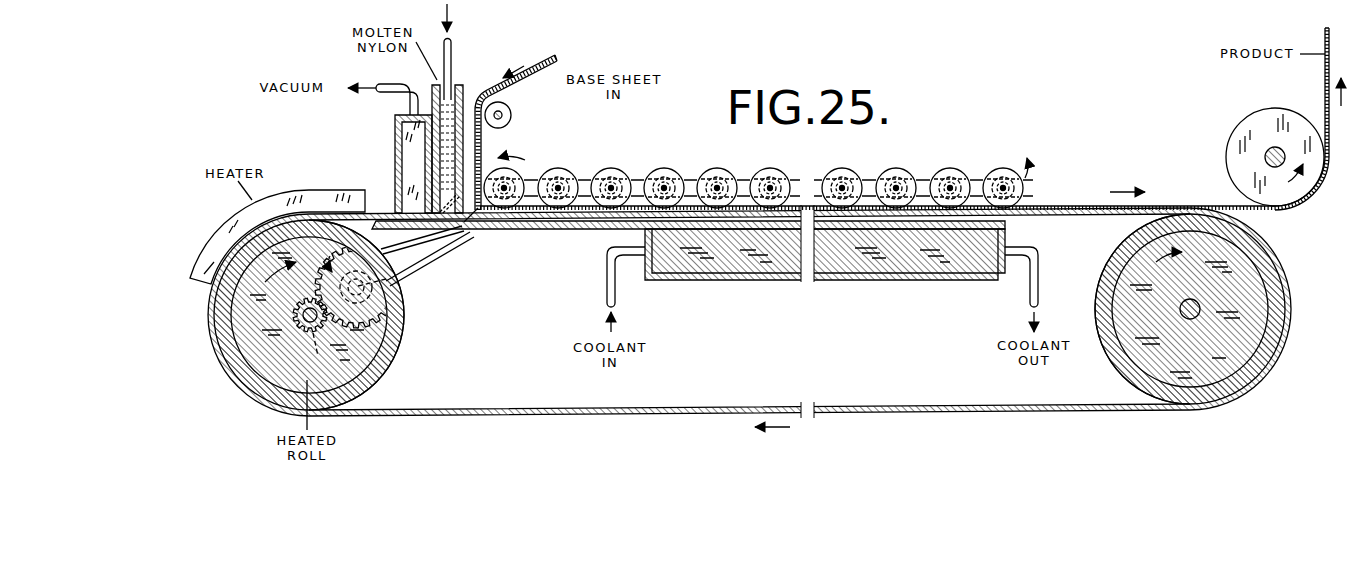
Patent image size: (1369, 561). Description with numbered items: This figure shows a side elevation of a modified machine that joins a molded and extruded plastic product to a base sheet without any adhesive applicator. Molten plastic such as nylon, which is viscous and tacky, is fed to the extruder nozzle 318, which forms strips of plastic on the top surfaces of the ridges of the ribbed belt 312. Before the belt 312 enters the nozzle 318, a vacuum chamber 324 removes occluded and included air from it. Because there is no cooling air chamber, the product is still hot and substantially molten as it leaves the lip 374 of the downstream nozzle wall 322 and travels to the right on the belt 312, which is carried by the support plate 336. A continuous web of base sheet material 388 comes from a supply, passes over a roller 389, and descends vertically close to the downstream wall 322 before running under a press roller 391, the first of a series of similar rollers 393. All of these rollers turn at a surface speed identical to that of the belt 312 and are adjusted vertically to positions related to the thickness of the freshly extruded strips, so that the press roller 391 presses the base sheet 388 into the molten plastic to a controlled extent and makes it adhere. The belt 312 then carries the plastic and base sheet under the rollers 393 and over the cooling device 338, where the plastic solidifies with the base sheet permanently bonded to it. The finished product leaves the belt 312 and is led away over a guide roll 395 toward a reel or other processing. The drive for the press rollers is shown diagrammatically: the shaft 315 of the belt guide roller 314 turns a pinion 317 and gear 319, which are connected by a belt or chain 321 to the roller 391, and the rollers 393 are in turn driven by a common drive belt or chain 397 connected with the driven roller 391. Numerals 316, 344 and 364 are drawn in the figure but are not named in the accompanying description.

The belt 312 is at (494, 410).
The belt guide roller 314 is at (242, 362).
The shaft 315 is at (296, 313).
The return roller 316 is at (1193, 402).
The pinion 317 is at (400, 323).
The extruder nozzle 318 is at (464, 82).
The gear 319 is at (297, 354).
The belt or chain 321 is at (416, 270).
The downstream nozzle wall 322 is at (463, 145).
The vacuum chamber 324 is at (393, 153).
The support plate 336 is at (547, 230).
The cooling device 338 is at (712, 276).
The heater 344 is at (207, 254).
The doctor blade 364 is at (437, 220).
The lip 374 is at (468, 227).
The base sheet material 388 is at (554, 60).
The roller 389 is at (512, 115).
The press roller 391 is at (525, 177).
The rollers 393 is at (613, 172).
The guide roll 395 is at (1238, 138).
The common drive belt or chain 397 is at (692, 174).